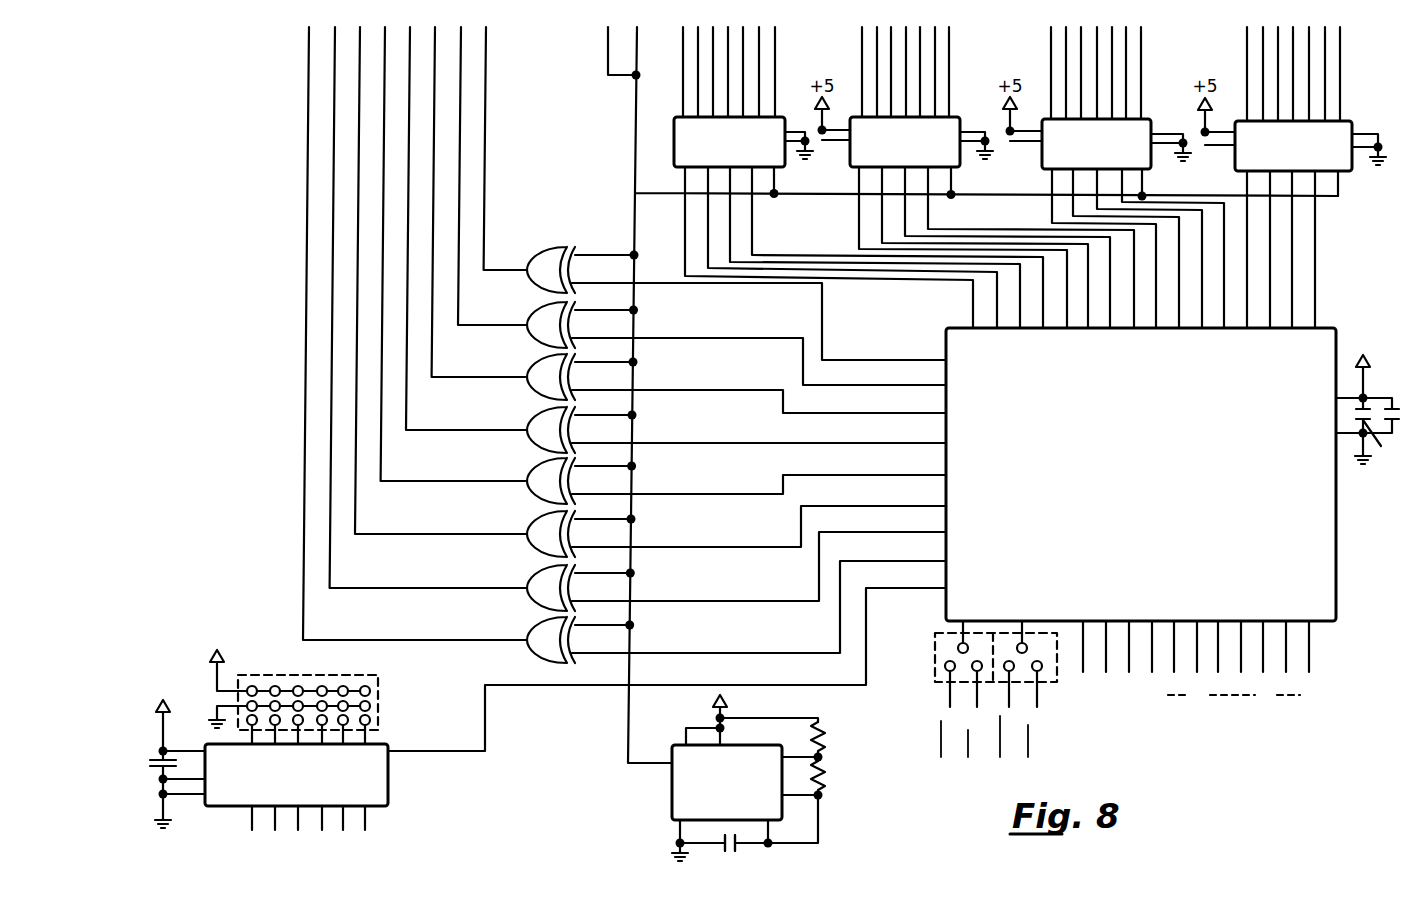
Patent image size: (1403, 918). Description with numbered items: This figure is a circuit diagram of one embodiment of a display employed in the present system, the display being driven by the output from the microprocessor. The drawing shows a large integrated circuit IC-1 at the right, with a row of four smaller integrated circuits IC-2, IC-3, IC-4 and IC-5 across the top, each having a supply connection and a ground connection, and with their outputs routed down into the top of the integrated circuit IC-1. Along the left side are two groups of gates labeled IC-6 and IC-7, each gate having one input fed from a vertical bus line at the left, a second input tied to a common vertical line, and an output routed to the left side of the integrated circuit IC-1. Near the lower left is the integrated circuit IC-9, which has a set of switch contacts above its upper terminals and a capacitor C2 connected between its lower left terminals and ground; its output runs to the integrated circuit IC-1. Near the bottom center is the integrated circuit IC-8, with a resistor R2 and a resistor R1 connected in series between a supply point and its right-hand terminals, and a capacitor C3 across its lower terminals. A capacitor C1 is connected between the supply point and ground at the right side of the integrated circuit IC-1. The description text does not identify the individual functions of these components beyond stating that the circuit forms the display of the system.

The microprocessor IC-1 is at (1135, 542).
The address buffer IC-2 is at (1310, 177).
The address buffer IC-3 is at (1133, 177).
The address buffer IC-4 is at (992, 177).
The address buffer IC-5 is at (858, 177).
The exclusive-OR gate package IC-6 is at (717, 350).
The exclusive-OR gate package IC-7 is at (717, 561).
The clock generator IC-8 is at (745, 776).
The address comparator with DIP switches IC-9 is at (296, 746).
The capacitor C1 is at (1368, 399).
The capacitor C2 is at (162, 752).
The capacitor C3 is at (724, 855).
The resistor R1 is at (835, 778).
The resistor R2 is at (835, 742).